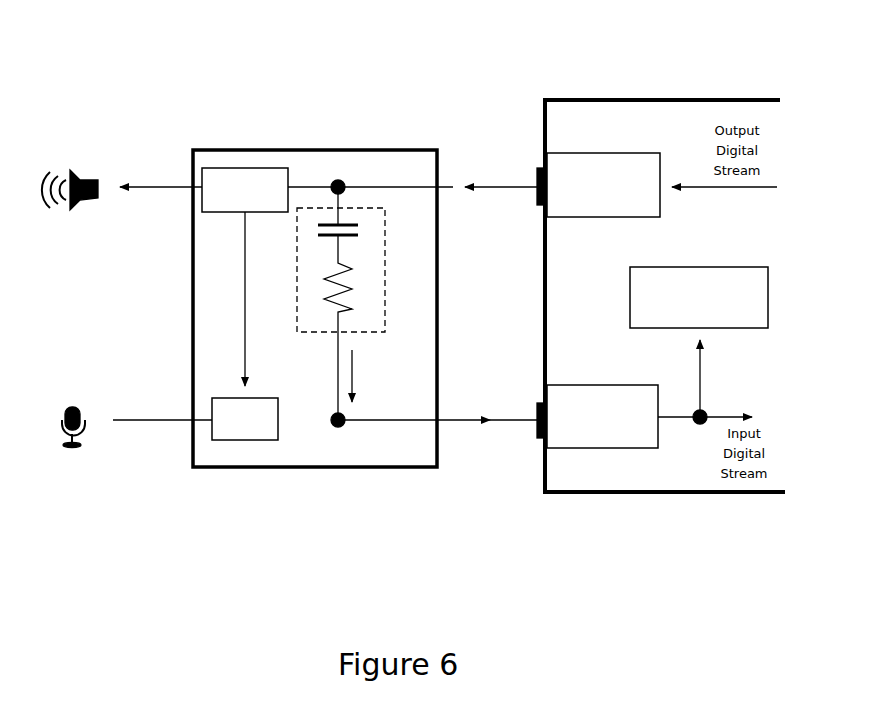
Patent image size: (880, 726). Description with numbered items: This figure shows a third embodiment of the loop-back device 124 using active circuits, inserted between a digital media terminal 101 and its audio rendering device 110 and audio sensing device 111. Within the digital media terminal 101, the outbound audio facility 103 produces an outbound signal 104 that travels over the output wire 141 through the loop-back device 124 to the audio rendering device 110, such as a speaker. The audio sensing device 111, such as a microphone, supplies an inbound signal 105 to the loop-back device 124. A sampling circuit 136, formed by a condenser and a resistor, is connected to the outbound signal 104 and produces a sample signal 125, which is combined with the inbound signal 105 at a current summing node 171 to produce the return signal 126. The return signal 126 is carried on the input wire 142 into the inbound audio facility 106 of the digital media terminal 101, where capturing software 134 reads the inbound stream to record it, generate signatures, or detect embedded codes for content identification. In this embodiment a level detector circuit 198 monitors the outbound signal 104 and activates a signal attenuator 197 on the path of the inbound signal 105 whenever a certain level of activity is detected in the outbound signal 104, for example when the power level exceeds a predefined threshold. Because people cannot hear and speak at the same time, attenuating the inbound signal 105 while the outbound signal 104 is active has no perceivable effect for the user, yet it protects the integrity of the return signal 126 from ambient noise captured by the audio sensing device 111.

The digital media terminal 101 is at (703, 92).
The outbound audio facility 103 is at (562, 153).
The outbound signal 104 is at (490, 130).
The inbound signal 105 is at (147, 490).
The inbound audio facility 106 is at (558, 385).
The audio rendering device 110 is at (83, 168).
The audio sensing device 111 is at (78, 402).
The loop-back device 124 is at (395, 143).
The sample signal 125 is at (358, 387).
The return signal 126 is at (490, 477).
The capturing software 134 is at (770, 292).
The sampling circuit 136 is at (390, 273).
The output wire 141 is at (525, 192).
The input wire 142 is at (527, 415).
The current summing node 171 is at (350, 430).
The signal attenuator 197 is at (263, 442).
The level detector circuit 198 is at (265, 165).